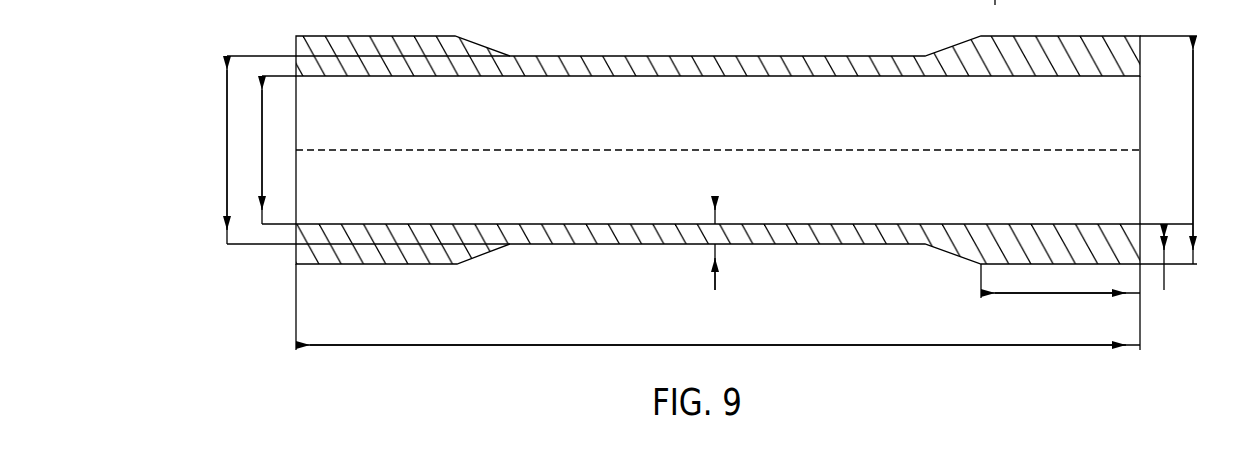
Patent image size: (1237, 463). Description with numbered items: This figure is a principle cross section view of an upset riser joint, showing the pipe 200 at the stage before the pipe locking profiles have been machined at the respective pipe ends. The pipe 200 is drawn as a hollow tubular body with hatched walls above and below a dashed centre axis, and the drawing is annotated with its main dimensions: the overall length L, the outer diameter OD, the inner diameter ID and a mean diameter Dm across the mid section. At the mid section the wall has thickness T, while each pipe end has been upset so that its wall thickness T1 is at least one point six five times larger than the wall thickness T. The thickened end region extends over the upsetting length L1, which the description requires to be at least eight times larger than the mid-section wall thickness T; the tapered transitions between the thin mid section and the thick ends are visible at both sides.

The pipe 200 is at (683, 62).
The mean diameter Dm is at (356, 150).
The inner diameter ID is at (267, 150).
The outer diameter OD is at (1168, 150).
The wall thickness T is at (715, 260).
The upset wall thickness T1 is at (1166, 273).
The end section length L1 is at (1060, 293).
The overall length L is at (718, 321).